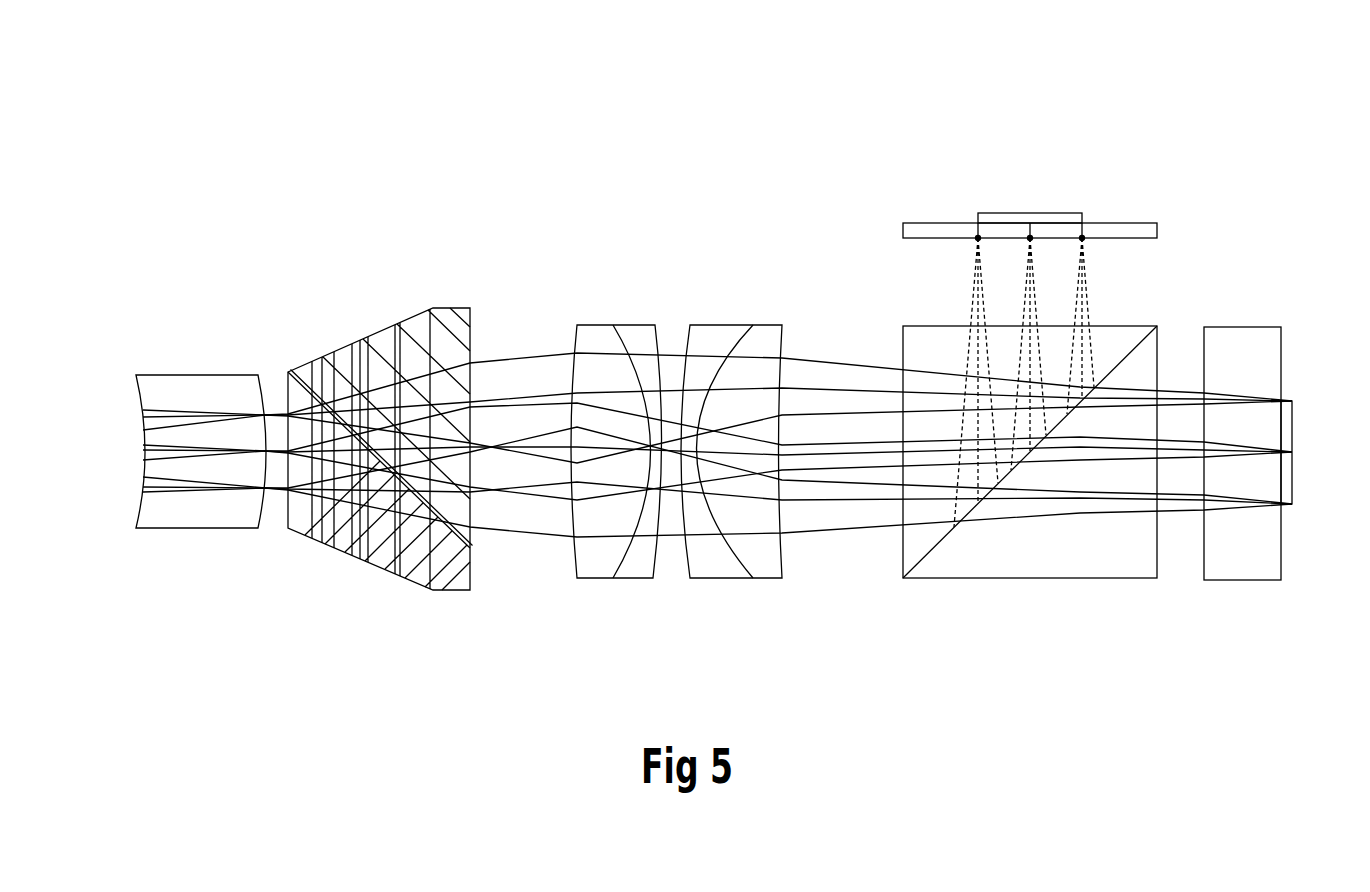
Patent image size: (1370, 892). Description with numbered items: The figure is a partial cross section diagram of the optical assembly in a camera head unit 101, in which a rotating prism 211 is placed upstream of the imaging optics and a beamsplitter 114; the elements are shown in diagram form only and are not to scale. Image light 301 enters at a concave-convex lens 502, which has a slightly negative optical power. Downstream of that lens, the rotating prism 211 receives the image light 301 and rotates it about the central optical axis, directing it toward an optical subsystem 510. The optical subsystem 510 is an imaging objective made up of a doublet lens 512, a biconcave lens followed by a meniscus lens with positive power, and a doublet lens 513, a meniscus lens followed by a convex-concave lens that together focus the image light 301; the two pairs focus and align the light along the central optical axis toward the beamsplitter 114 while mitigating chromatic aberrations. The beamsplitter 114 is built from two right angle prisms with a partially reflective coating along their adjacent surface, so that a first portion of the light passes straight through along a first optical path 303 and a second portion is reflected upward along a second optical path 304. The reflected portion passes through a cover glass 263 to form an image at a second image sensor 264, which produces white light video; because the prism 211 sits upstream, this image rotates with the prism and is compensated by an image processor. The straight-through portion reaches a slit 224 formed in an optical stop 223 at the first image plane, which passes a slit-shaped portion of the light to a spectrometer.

The camera head unit 101 is at (452, 124).
The concave-convex lens 502 is at (197, 376).
The image light 301 is at (273, 399).
The rotating prism 211 is at (380, 285).
The optical subsystem 510 is at (664, 470).
The doublet lens 512 is at (603, 327).
The doublet lens 513 is at (713, 328).
The beamsplitter 114 is at (923, 326).
The cover glass 263 is at (1157, 223).
The second image sensor 264 is at (1062, 213).
The second optical path 304 is at (1106, 284).
The first optical path 303 is at (1177, 527).
The optical stop 223 is at (1293, 410).
The slit 224 is at (1293, 452).